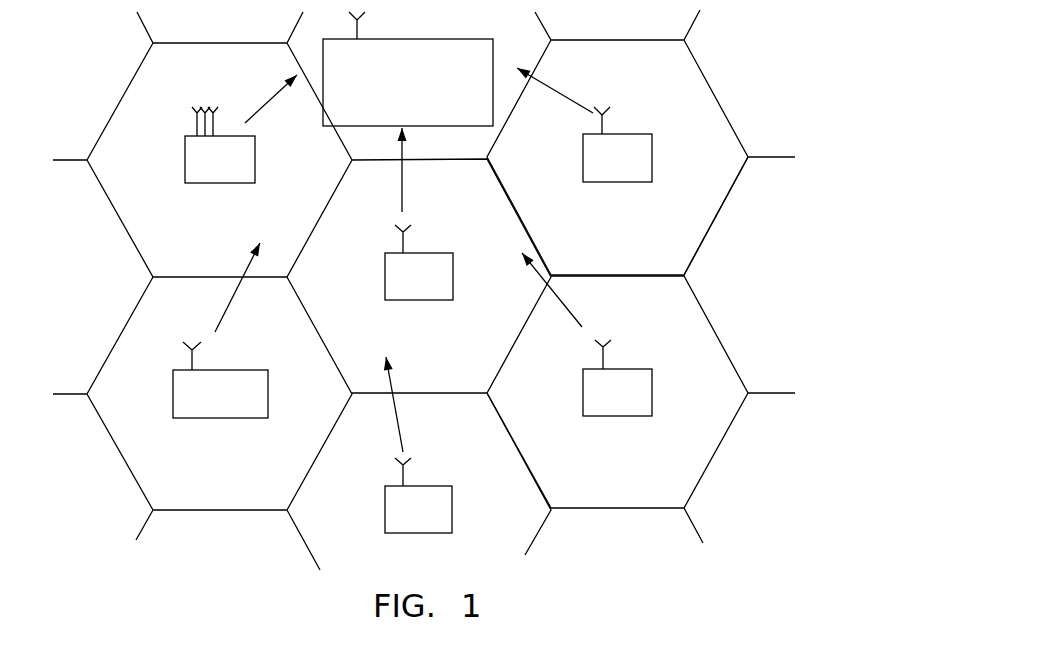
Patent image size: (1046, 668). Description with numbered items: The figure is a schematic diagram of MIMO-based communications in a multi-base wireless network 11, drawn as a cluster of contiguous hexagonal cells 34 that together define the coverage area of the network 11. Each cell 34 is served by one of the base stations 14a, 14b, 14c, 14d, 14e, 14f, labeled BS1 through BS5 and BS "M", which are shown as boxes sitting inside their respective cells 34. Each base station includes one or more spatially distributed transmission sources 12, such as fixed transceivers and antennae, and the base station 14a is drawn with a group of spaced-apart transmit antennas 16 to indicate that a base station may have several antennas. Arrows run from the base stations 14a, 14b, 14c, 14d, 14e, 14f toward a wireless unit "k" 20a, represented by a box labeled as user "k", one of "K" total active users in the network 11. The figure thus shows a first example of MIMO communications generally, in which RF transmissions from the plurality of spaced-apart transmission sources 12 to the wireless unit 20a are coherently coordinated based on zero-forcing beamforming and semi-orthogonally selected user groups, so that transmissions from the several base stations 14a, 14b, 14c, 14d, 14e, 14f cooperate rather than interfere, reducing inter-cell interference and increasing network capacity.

The multi-base wireless network 11 is at (757, 72).
The transmission source 12 is at (632, 105).
The base station 14a is at (212, 183).
The base station 14b is at (421, 253).
The base station 14c is at (628, 134).
The base station 14d is at (620, 369).
The base station 14e is at (418, 486).
The base station 14f is at (233, 370).
The transmit antennas 16 is at (185, 155).
The wireless unit 20a is at (405, 39).
The cell 34 is at (715, 218).